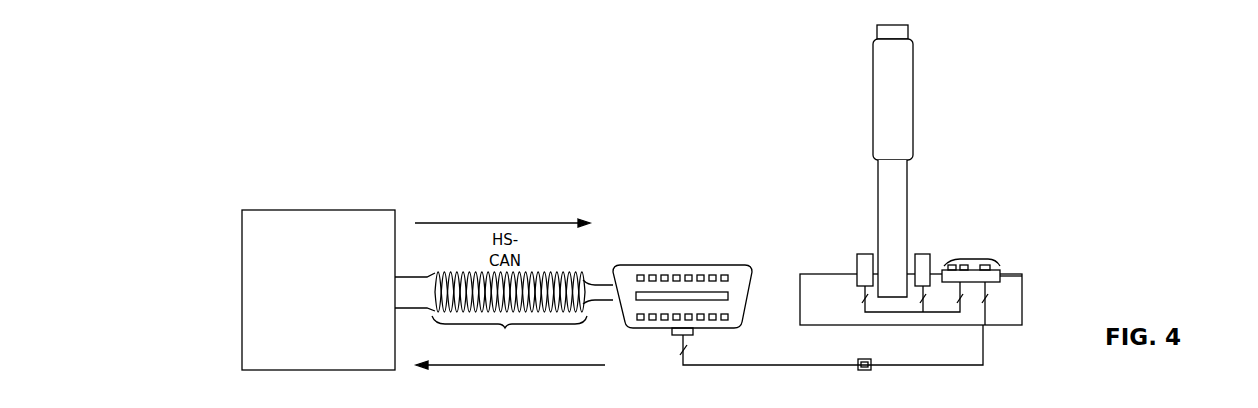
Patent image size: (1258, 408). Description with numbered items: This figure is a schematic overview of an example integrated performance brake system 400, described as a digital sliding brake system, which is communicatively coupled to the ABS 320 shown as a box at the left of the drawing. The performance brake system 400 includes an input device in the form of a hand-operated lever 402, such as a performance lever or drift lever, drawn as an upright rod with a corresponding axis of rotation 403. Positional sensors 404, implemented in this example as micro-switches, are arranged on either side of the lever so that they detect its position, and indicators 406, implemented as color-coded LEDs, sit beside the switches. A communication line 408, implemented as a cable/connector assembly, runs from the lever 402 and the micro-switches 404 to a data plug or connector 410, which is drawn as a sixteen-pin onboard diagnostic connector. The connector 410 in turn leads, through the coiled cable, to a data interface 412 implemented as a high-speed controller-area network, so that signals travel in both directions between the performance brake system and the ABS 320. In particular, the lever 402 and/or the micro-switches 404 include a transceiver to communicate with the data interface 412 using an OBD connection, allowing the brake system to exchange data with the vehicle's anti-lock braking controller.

The ABS 320 is at (343, 210).
The integrated performance brake system 400 is at (1170, 73).
The hand-operated lever 402 is at (956, 73).
The axis of rotation 403 is at (888, 272).
The positional sensors 404 is at (857, 268).
The indicators 406 is at (968, 262).
The communication line 408 is at (778, 366).
The connector 410 is at (648, 268).
The data interface 412 is at (504, 313).